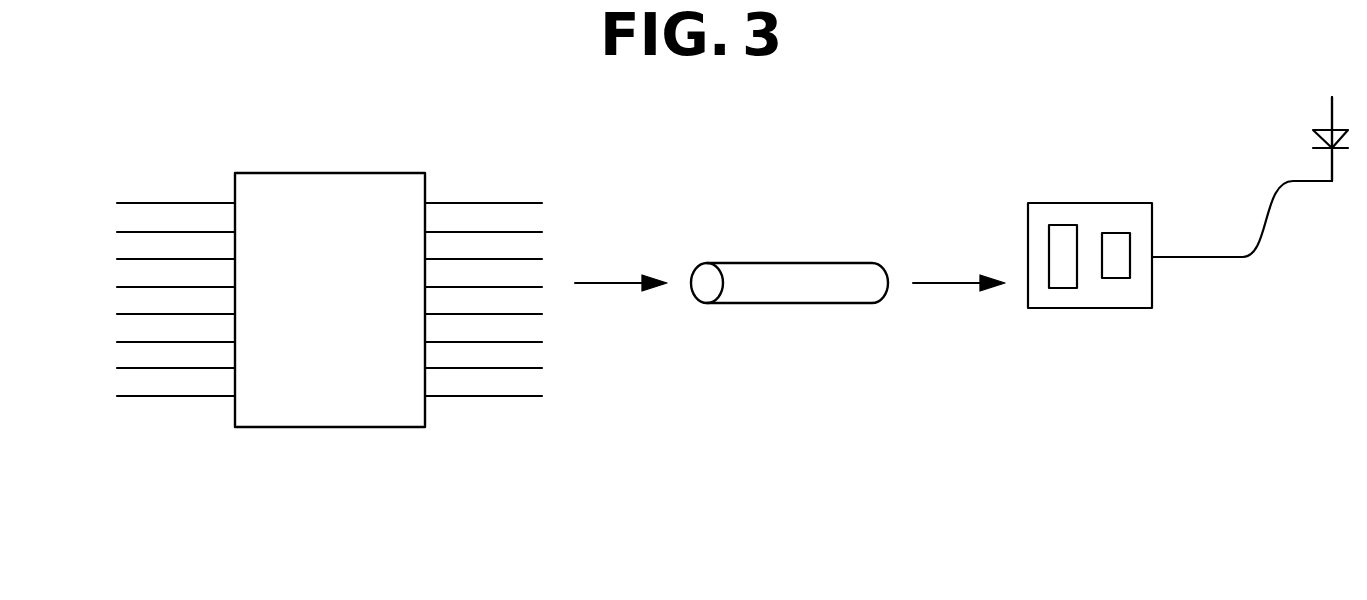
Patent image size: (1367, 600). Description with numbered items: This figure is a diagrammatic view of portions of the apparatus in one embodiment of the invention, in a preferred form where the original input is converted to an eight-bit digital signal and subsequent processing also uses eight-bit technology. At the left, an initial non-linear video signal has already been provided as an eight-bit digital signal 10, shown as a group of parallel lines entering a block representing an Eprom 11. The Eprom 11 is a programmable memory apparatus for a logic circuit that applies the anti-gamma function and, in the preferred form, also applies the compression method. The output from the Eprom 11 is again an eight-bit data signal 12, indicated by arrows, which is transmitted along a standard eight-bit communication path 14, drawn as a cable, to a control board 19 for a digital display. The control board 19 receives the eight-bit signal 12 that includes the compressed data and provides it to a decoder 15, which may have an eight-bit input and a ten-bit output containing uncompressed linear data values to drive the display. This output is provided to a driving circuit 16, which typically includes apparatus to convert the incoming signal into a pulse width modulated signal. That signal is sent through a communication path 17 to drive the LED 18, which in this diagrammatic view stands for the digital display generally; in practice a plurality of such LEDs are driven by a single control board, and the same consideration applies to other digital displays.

The 8-bit digital signal 10 is at (77, 170).
The Eprom 11 is at (325, 190).
The 8-bit data signal 12 is at (618, 283).
The 8-bit communication path 14 is at (792, 293).
The decoder 15 is at (1055, 238).
The driving circuit 16 is at (1113, 240).
The communication path 17 is at (1215, 255).
The LED 18 is at (1332, 112).
The control board 19 is at (1093, 295).